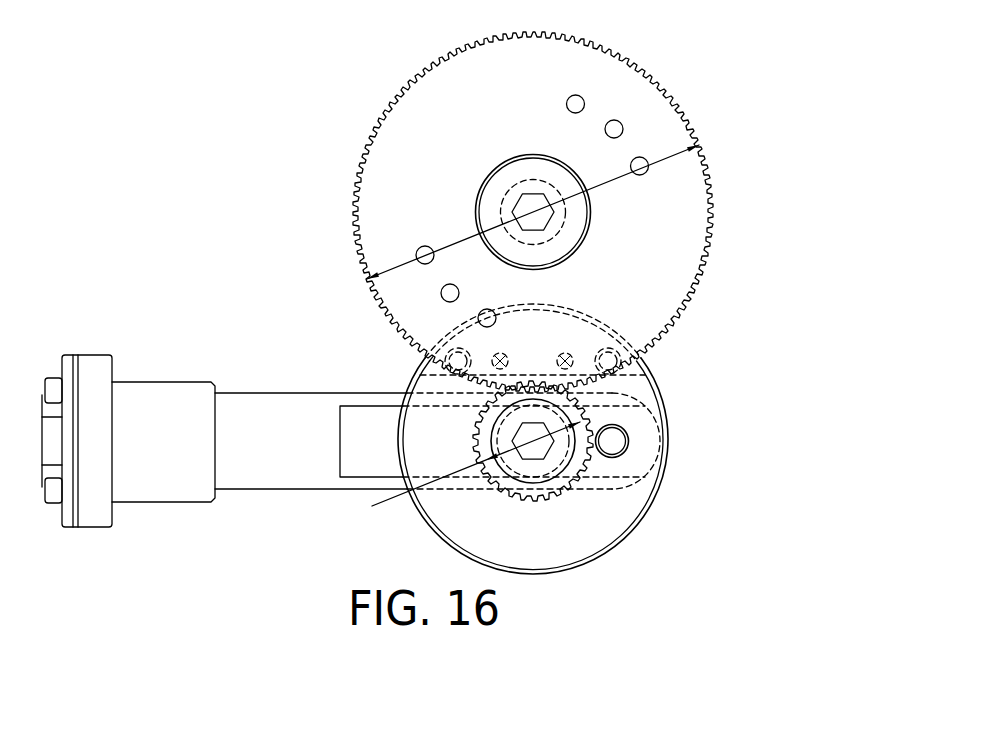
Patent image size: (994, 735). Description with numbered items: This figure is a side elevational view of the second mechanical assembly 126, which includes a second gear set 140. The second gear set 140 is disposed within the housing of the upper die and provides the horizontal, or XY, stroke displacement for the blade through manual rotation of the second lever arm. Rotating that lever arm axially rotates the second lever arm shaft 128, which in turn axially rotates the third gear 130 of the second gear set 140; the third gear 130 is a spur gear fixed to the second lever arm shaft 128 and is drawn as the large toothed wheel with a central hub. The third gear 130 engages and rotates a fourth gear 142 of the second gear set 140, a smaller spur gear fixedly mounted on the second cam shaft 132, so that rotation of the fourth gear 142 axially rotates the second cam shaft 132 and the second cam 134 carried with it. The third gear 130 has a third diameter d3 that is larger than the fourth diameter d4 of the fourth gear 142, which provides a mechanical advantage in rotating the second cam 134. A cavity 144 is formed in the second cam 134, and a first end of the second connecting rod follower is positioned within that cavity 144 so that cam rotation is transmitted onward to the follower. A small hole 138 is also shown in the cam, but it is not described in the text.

The second mechanical assembly 126 is at (205, 149).
The second lever arm shaft 128 is at (497, 212).
The third gear 130 is at (687, 188).
The second cam shaft 132 is at (507, 497).
The second cam 134 is at (588, 538).
The pin hole 138 is at (610, 440).
The second gear set 140 is at (738, 262).
The fourth gear 142 is at (547, 497).
The cavity 144 is at (385, 438).
The third diameter d3 is at (533, 212).
The fourth diameter d4 is at (372, 506).